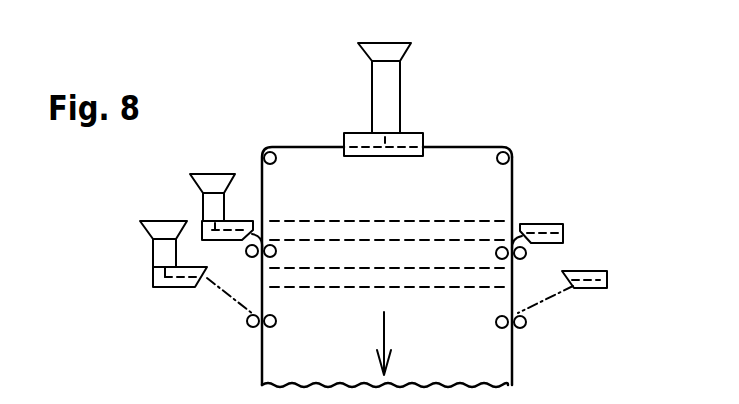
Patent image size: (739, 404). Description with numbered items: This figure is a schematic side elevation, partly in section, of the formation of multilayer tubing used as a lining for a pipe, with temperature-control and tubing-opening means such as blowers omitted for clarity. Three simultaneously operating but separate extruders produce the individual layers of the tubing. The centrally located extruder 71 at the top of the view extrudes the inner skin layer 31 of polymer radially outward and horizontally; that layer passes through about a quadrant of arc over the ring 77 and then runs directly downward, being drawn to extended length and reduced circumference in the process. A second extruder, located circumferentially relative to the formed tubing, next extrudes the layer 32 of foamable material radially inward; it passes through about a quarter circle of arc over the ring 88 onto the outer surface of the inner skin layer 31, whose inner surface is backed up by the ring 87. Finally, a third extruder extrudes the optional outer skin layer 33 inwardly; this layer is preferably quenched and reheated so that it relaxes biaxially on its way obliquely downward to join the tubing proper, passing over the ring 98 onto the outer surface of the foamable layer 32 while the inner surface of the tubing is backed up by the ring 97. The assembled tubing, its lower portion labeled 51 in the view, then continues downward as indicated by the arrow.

The inner skin layer 31 is at (463, 147).
The foamable layer 32 is at (514, 228).
The outer skin layer 33 is at (545, 300).
The lower section of chamber 51 is at (514, 358).
The extruder 71 is at (372, 94).
The ring 77 is at (497, 162).
The ring 87 is at (497, 258).
The ring 88 is at (527, 254).
The ring 97 is at (497, 326).
The ring 98 is at (527, 324).